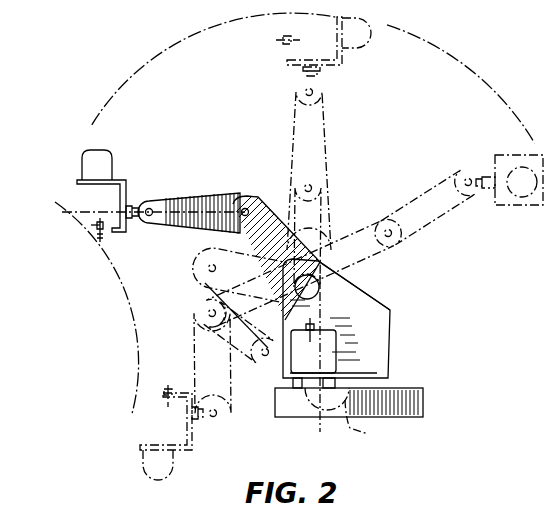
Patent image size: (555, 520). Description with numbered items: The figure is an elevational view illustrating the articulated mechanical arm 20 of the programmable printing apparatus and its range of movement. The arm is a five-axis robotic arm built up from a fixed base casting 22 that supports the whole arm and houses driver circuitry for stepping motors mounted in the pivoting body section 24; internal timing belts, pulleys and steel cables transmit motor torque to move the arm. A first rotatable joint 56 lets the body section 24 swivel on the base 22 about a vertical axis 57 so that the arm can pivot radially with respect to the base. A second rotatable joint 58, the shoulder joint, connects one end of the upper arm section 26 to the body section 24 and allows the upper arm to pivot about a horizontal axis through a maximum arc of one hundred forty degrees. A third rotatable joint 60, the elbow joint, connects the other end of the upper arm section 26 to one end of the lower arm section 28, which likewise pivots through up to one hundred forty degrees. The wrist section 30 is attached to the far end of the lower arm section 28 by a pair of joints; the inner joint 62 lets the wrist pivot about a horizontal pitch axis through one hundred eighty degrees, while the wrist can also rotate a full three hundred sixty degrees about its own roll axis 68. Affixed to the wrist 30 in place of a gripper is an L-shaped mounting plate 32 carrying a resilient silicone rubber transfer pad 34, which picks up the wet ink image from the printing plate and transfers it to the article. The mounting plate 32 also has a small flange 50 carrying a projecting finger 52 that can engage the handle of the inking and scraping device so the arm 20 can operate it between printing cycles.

The articulated mechanical arm 20 is at (436, 287).
The base casting 22 is at (440, 401).
The pivoting body section 24 is at (385, 325).
The upper arm section 26 is at (262, 202).
The lower arm section 28 is at (195, 196).
The wrist section 30 is at (133, 220).
The L-shaped mounting plate 32 is at (122, 180).
The resilient transfer pad 34 is at (84, 158).
The flange 50 is at (122, 232).
The projecting finger 52 is at (97, 226).
The first rotatable joint 56 is at (369, 425).
The vertical axis 57 is at (332, 345).
The second rotatable joint 58 is at (318, 296).
The third rotatable joint 60 is at (246, 208).
The inner joint 62 is at (152, 206).
The roll axis 68 is at (58, 205).